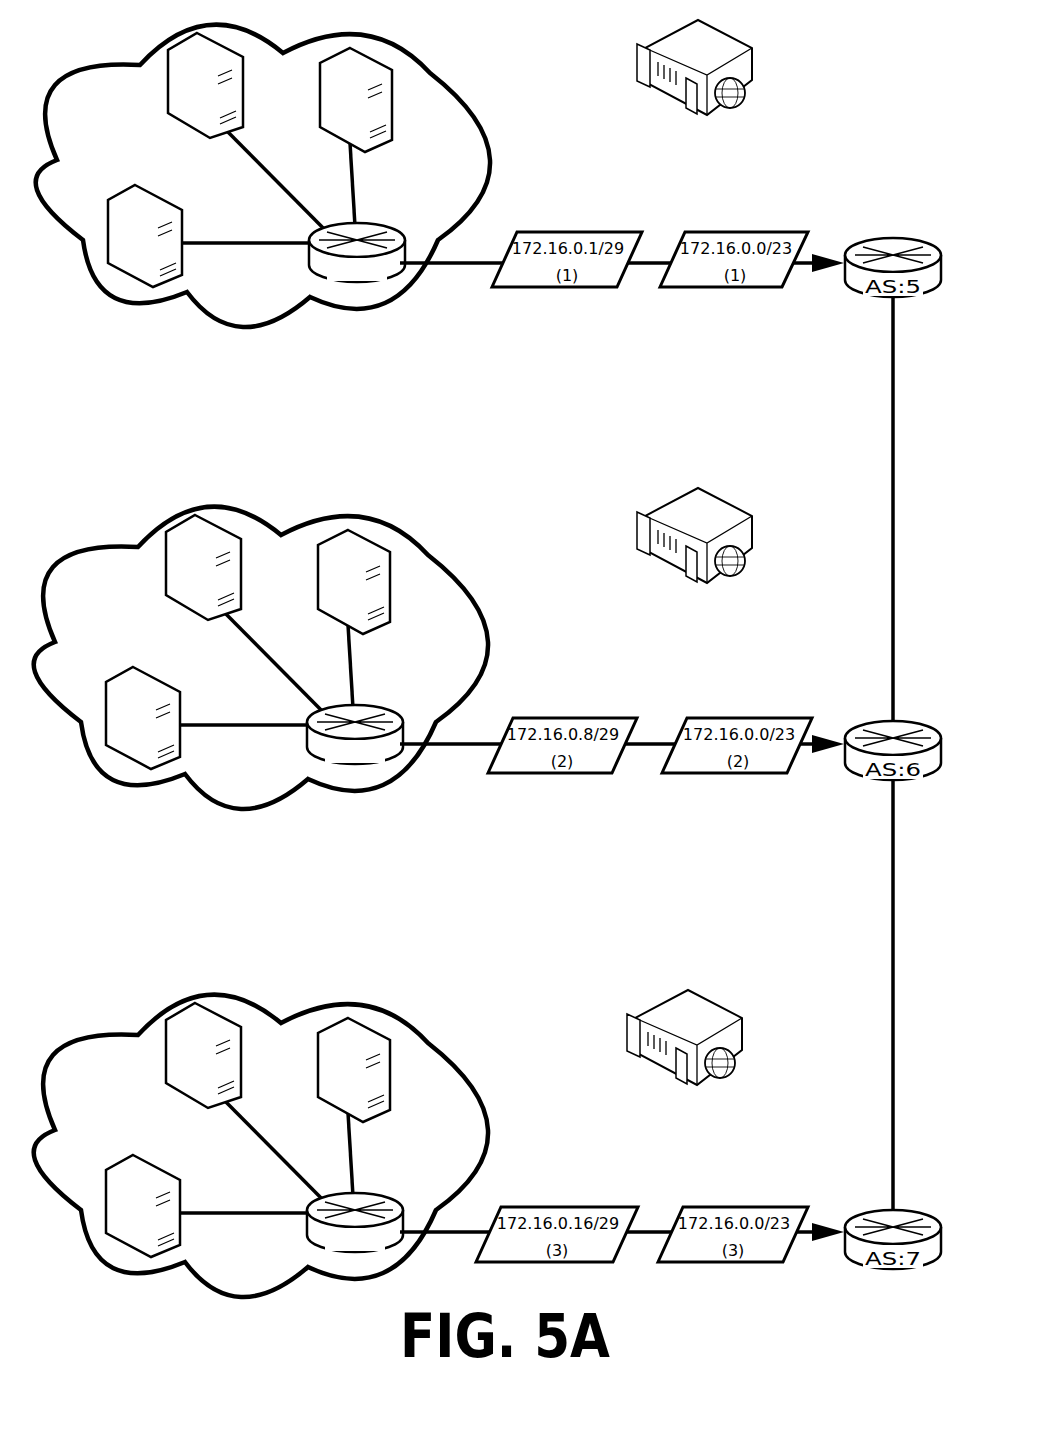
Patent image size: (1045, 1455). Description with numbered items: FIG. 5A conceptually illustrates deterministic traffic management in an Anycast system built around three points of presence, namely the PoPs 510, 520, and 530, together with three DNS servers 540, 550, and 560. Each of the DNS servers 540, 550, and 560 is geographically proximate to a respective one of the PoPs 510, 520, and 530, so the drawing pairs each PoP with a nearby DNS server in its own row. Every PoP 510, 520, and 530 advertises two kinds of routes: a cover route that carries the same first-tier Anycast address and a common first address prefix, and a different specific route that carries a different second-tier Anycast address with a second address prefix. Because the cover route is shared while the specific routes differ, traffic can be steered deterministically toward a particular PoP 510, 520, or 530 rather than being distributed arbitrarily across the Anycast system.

The PoP 510 is at (423, 67).
The PoP 520 is at (367, 515).
The PoP 530 is at (360, 1003).
The DNS server 540 is at (752, 63).
The DNS server 550 is at (713, 497).
The DNS server 560 is at (713, 1002).